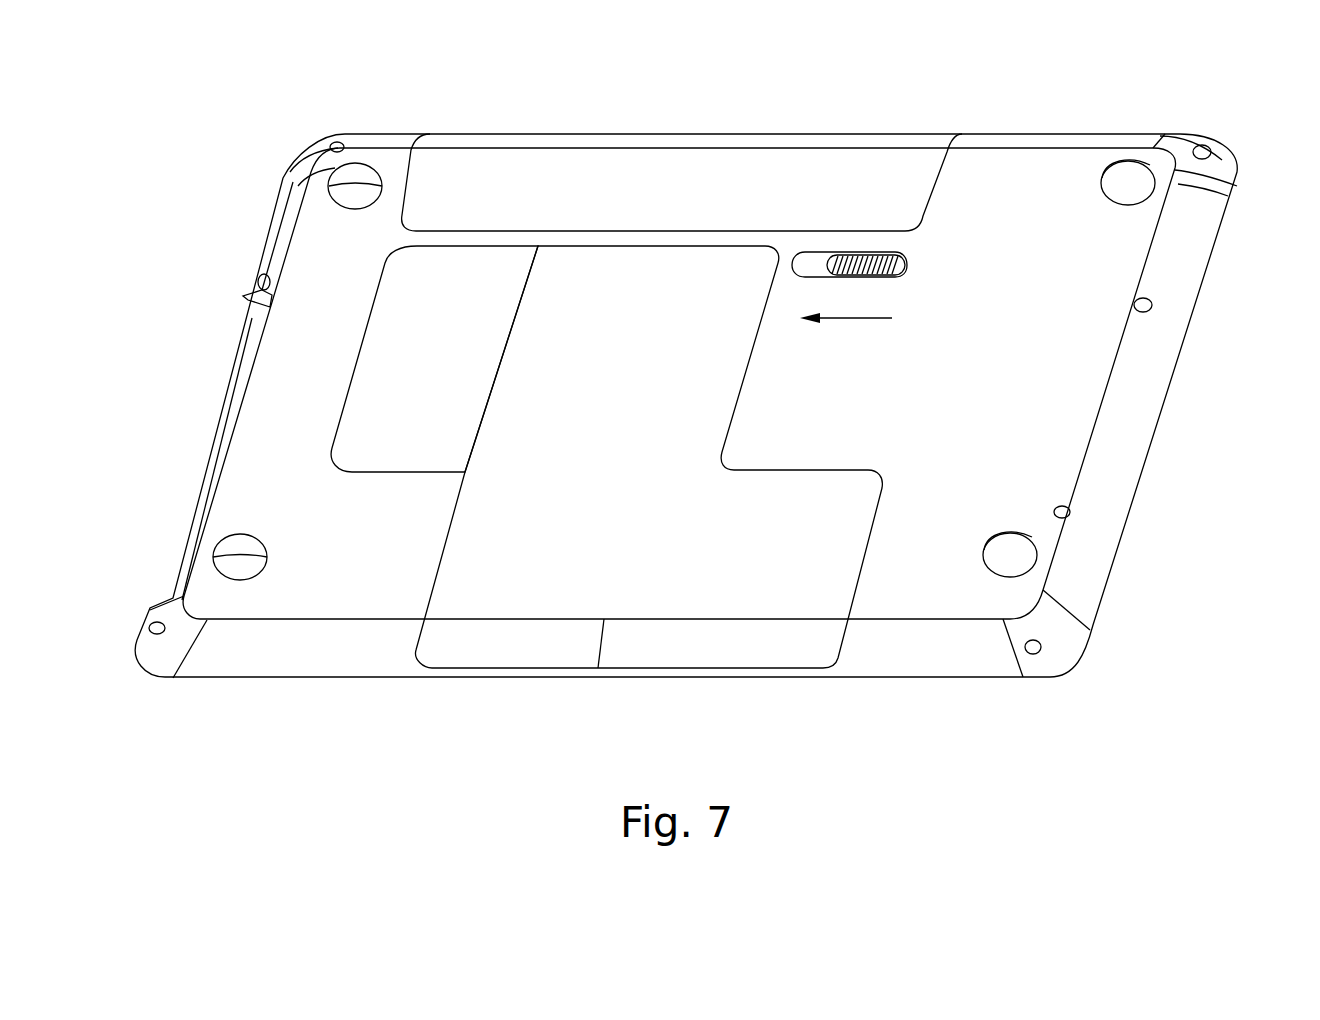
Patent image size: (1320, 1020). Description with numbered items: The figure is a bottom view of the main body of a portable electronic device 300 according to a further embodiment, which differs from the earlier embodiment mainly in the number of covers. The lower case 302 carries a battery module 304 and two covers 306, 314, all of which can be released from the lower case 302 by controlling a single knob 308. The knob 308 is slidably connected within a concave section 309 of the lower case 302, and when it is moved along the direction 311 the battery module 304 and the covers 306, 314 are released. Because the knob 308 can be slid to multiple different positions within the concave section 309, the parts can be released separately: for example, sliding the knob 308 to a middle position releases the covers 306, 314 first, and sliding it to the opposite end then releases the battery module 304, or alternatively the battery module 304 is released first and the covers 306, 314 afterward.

The portable electronic device 300 is at (1100, 96).
The lower case 302 is at (1080, 352).
The battery module 304 is at (523, 173).
The cover 306 is at (728, 570).
The knob 308 is at (870, 253).
The concave section 309 is at (803, 267).
The direction 311 is at (857, 318).
The cover 314 is at (368, 397).